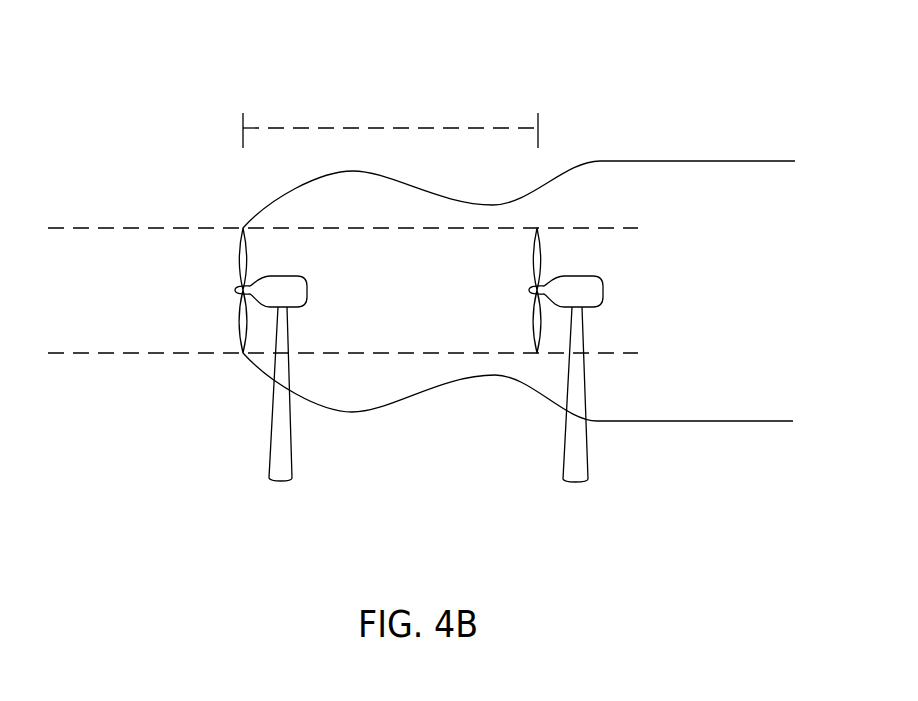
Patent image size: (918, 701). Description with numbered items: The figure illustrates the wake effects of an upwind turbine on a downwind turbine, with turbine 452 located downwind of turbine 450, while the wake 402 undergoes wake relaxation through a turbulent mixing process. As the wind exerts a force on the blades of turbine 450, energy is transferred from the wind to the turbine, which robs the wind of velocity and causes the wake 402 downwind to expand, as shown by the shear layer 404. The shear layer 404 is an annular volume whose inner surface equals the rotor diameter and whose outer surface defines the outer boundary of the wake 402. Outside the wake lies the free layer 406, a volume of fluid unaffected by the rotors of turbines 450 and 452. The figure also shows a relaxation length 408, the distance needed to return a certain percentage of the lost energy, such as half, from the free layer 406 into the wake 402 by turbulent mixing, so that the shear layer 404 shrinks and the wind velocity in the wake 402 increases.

The wake 402 is at (693, 317).
The shear layer 404 is at (605, 203).
The free layer 406 is at (157, 168).
The relaxation length 408 is at (367, 127).
The turbine 450 is at (278, 451).
The turbine 452 is at (578, 448).